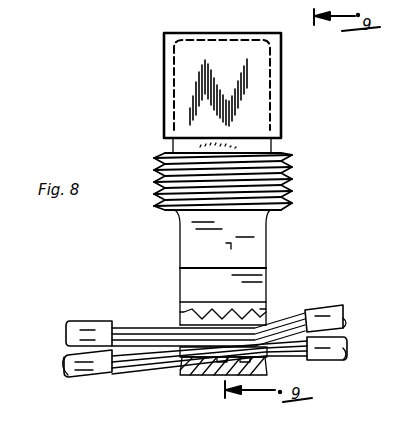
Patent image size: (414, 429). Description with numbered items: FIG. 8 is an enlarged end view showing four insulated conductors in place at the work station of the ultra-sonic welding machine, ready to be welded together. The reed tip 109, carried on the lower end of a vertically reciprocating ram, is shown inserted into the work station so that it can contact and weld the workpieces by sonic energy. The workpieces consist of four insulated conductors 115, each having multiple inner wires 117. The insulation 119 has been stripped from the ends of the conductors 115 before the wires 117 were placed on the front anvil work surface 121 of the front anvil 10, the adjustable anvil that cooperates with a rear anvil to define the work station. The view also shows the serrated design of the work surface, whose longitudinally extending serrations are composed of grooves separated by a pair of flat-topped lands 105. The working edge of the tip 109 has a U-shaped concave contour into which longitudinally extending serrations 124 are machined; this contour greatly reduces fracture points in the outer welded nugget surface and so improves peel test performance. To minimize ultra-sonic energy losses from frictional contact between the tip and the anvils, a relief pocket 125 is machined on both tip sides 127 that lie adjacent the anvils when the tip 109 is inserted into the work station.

The front anvil 10 is at (282, 366).
The flat-topped lands 105 is at (210, 362).
The reed tip 109 is at (278, 229).
The insulated conductors 115 is at (57, 336).
The inner wires 117 is at (140, 340).
The insulation 119 is at (72, 356).
The front anvil work surface 121 is at (158, 356).
The serrations 124 is at (210, 318).
The relief pocket 125 is at (203, 282).
The tip sides 127 is at (187, 227).